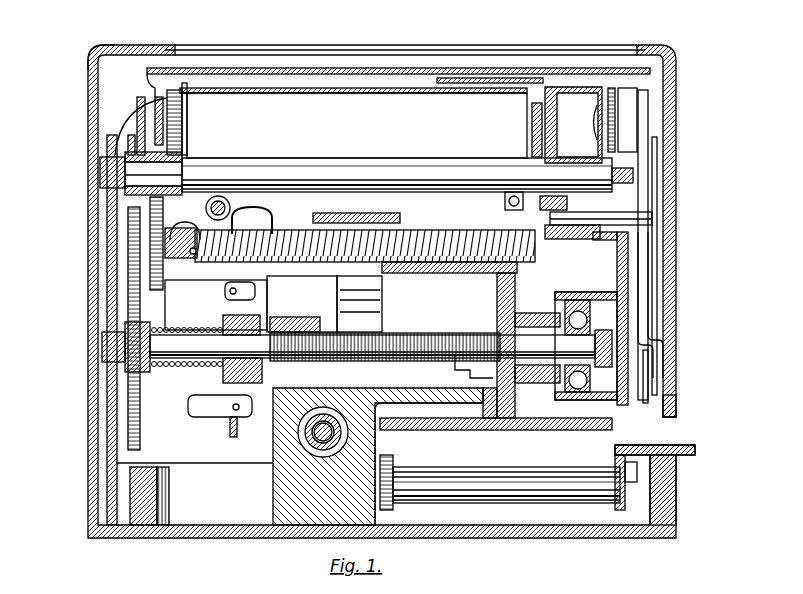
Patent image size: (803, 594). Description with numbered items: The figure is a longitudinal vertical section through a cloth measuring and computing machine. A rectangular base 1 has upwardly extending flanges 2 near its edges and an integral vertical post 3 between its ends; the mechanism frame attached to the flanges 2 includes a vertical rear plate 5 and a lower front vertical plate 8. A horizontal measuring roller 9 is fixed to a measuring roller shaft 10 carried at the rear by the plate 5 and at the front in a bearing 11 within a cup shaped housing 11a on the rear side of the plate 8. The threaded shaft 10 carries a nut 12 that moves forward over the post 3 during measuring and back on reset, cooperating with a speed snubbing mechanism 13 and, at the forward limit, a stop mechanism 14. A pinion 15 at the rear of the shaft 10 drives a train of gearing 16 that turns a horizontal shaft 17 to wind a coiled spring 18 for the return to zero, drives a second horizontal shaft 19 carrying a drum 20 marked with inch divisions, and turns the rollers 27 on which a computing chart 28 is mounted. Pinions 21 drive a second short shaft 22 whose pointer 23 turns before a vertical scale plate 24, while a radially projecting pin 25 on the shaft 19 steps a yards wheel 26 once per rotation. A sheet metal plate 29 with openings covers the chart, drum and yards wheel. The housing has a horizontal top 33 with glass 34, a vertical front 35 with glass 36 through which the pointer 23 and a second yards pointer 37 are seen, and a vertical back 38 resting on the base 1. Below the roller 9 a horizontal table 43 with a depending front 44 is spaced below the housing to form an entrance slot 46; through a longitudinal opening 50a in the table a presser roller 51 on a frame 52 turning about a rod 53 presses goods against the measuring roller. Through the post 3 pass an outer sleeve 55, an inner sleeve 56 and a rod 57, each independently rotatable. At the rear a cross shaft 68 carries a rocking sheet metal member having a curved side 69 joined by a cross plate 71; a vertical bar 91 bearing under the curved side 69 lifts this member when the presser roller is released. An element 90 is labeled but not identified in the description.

The base 1 is at (214, 540).
The flanges 2 is at (130, 486).
The vertical post 3 is at (283, 468).
The vertical rear plate 5 is at (107, 432).
The front vertical plate 8 is at (630, 298).
The measuring roller 9 is at (505, 430).
The measuring roller shaft 10 is at (390, 342).
The bearing 11 is at (568, 400).
The cup shaped housing 11a is at (598, 400).
The nut 12 is at (290, 318).
The speed snubbing mechanism 13 is at (225, 368).
The stop mechanism 14 is at (452, 362).
The pinion 15 is at (125, 362).
The train of gearing 16 is at (128, 302).
The horizontal shaft 17 is at (195, 234).
The coiled spring 18 is at (435, 246).
The second horizontal shaft 19 is at (368, 162).
The drum 20 is at (545, 118).
The pinions 21 is at (540, 203).
The second short shaft 22 is at (650, 218).
The pointer 23 is at (657, 178).
The vertical plate 24 is at (652, 130).
The radially projecting pin 25 is at (606, 158).
The yards wheel 26 is at (640, 108).
The rollers 27 is at (248, 100).
The computing chart 28 is at (328, 96).
The sheet metal plate 29 is at (380, 68).
The horizontal top 33 is at (128, 50).
The glass 34 is at (302, 53).
The vertical front 35 is at (678, 405).
The glass 36 is at (662, 334).
The second yards pointer 37 is at (656, 352).
The vertical back 38 is at (108, 232).
The horizontal table 43 is at (655, 447).
The front 44 is at (677, 495).
The entrance slot 46 is at (660, 432).
The recess 50a is at (430, 403).
The presser roller 51 is at (462, 502).
The frame 52 is at (388, 508).
The rod 53 is at (624, 504).
The outer sleeve 55 is at (312, 442).
The sleeve 56 is at (314, 440).
The rod 57 is at (300, 428).
The cross shaft 68 is at (224, 202).
The side 69 is at (276, 226).
The cross plate 71 is at (352, 226).
The strip 90 is at (467, 85).
The vertical bar 91 is at (330, 308).